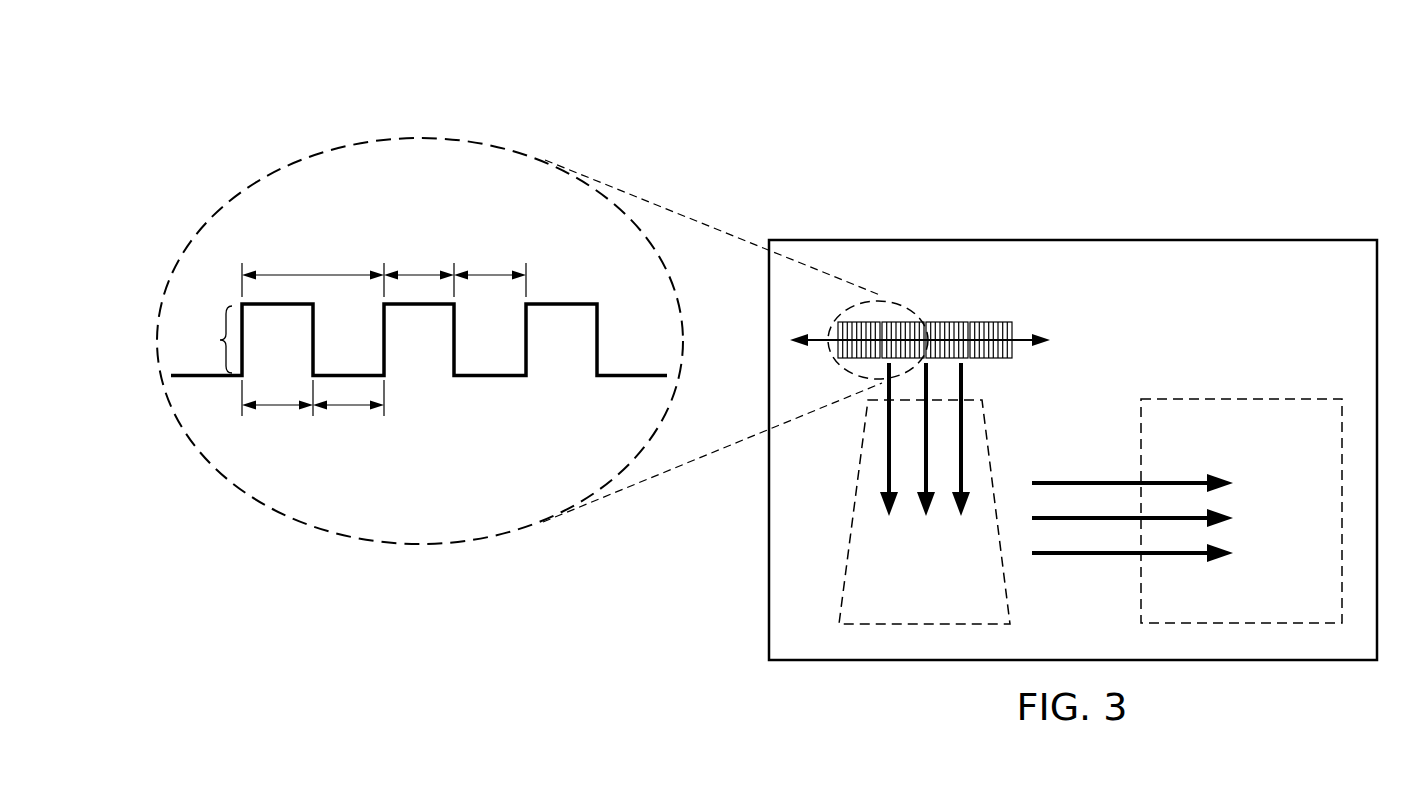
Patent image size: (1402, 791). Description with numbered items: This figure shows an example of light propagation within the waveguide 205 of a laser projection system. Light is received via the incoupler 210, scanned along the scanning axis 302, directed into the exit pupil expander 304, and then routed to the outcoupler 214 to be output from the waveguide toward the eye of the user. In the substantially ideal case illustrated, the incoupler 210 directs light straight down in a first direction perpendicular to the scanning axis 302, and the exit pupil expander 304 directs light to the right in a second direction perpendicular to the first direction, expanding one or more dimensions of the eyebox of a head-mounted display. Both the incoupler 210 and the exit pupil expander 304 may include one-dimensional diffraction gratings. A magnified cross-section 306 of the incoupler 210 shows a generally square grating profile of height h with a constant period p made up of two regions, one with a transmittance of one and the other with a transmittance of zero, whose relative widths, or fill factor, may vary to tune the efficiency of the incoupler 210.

The waveguide 205 is at (1149, 232).
The incoupler 210 is at (990, 322).
The outcoupler 214 is at (1253, 398).
The scanning axis 302 is at (1020, 335).
The exit pupil expander 304 is at (990, 455).
The cross-section 306 is at (358, 138).